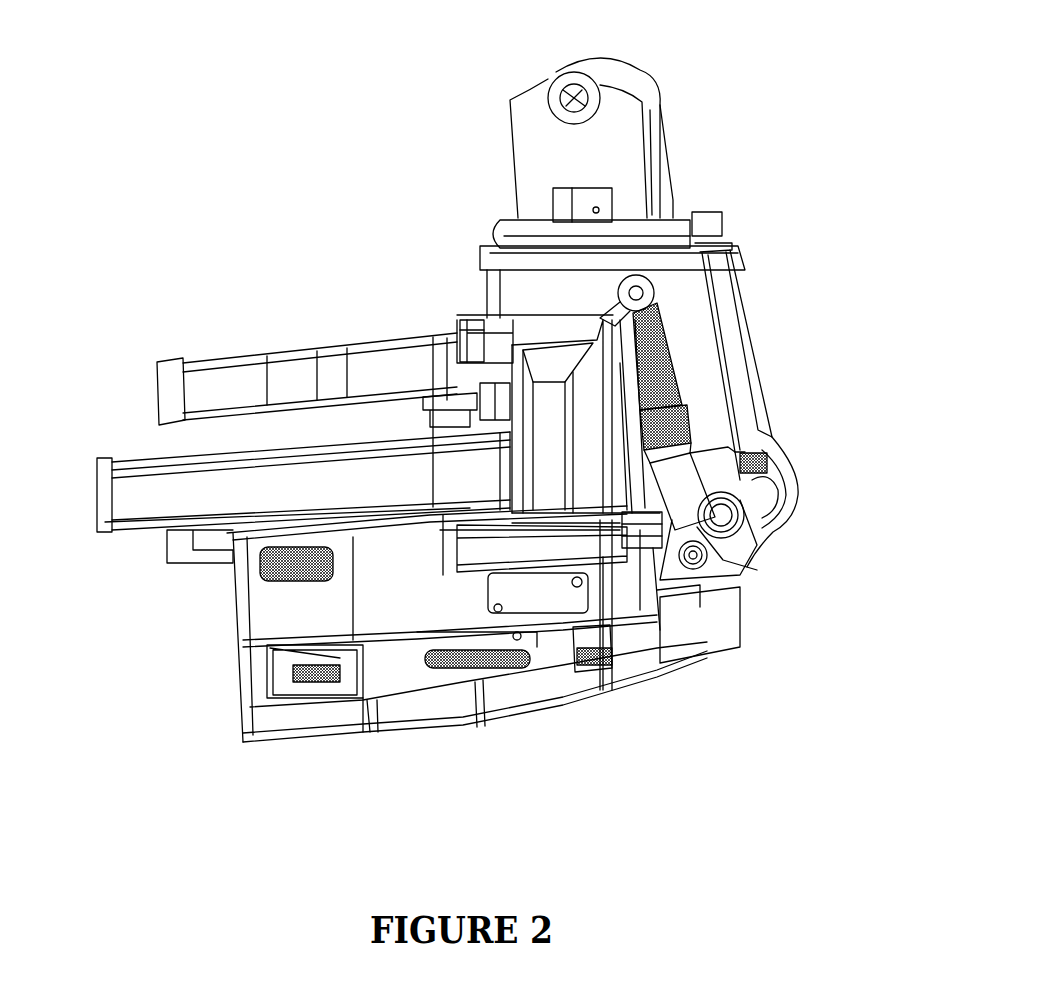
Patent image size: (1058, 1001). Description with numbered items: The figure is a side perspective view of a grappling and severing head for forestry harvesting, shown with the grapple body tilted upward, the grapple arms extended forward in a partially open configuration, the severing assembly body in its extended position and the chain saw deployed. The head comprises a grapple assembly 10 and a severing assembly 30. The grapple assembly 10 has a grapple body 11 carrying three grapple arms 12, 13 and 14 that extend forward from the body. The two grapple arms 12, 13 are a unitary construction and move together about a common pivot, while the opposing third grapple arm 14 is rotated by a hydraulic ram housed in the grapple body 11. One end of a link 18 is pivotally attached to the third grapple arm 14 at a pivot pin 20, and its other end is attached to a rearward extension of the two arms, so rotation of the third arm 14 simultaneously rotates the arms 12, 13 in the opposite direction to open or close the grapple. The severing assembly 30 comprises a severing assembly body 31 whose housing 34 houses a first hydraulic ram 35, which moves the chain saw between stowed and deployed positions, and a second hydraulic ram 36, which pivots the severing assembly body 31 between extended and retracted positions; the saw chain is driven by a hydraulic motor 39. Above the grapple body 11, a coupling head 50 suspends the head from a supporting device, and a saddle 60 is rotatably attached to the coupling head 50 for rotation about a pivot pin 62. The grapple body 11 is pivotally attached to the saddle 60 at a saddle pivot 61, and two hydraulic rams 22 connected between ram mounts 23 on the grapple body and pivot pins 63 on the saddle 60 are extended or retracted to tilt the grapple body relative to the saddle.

The grapple assembly 10 is at (303, 230).
The grapple body 11 is at (487, 330).
The grapple arm 12 is at (243, 378).
The grapple arm 13 is at (200, 538).
The opposing third grapple arm 14 is at (132, 482).
The link 18 is at (425, 415).
The pivot pin 20 is at (457, 340).
The hydraulic ram 22 is at (680, 393).
The ram mount 23 is at (622, 310).
The severing assembly 30 is at (205, 775).
The severing assembly body 31 is at (270, 618).
The housing 34 is at (407, 683).
The first hydraulic actuator or ram 35 is at (493, 668).
The second hydraulic actuator or ram 36 is at (280, 578).
The hydraulic motor 39 is at (320, 655).
The coupling head 50 is at (655, 78).
The saddle 60 is at (730, 262).
The saddle pivot 61 is at (723, 515).
The pivot pin 62 is at (585, 210).
The pivot pin 63 is at (715, 530).